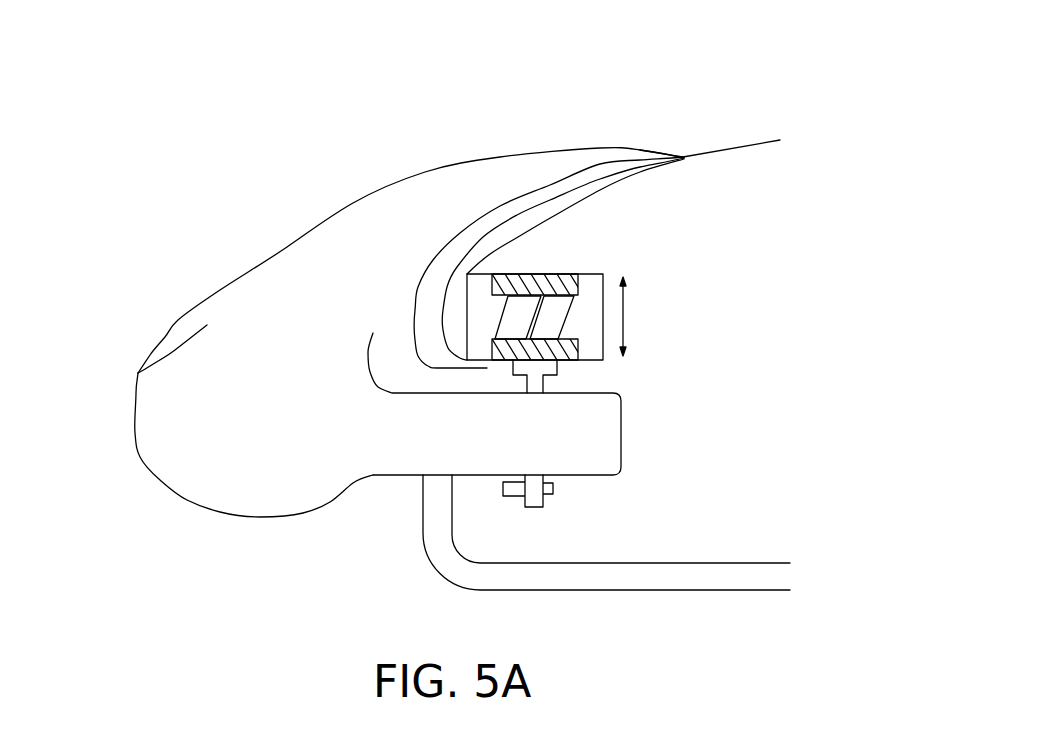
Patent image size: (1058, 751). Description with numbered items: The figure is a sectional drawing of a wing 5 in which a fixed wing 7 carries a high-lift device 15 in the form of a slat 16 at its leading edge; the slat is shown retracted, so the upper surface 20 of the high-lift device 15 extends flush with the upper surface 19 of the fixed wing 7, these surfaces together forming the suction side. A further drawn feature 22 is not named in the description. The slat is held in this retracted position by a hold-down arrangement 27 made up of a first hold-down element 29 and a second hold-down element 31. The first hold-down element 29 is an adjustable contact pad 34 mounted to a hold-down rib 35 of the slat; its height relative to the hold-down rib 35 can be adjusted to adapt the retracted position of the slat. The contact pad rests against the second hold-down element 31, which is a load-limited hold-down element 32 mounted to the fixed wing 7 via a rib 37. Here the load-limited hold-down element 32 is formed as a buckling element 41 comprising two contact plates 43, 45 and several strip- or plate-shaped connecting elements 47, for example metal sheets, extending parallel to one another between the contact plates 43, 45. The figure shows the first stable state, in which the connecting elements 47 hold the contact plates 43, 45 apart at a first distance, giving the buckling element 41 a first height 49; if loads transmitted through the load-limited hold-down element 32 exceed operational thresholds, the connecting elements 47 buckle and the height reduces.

The wing 5 is at (208, 160).
The fixed wing 7 is at (806, 367).
The high-lift device 15 is at (204, 421).
The slat 16 is at (138, 373).
The upper surface of the fixed wing 19 is at (752, 143).
The upper surface of the high-lift device 20 is at (425, 172).
The rear edge of hood 22 is at (660, 148).
The hold-down arrangement 27 is at (648, 345).
The first hold-down element 29 is at (643, 416).
The second hold-down element 31 is at (633, 317).
The load-limited hold-down element 32 is at (633, 317).
The adjustable contact pad 34 is at (560, 368).
The hold-down rib 35 is at (400, 455).
The rib 37 is at (552, 218).
The buckling element 41 is at (578, 286).
The contact plate 43 is at (492, 344).
The contact plate 45 is at (467, 273).
The connecting elements 47 is at (540, 299).
The first height 49 is at (623, 317).